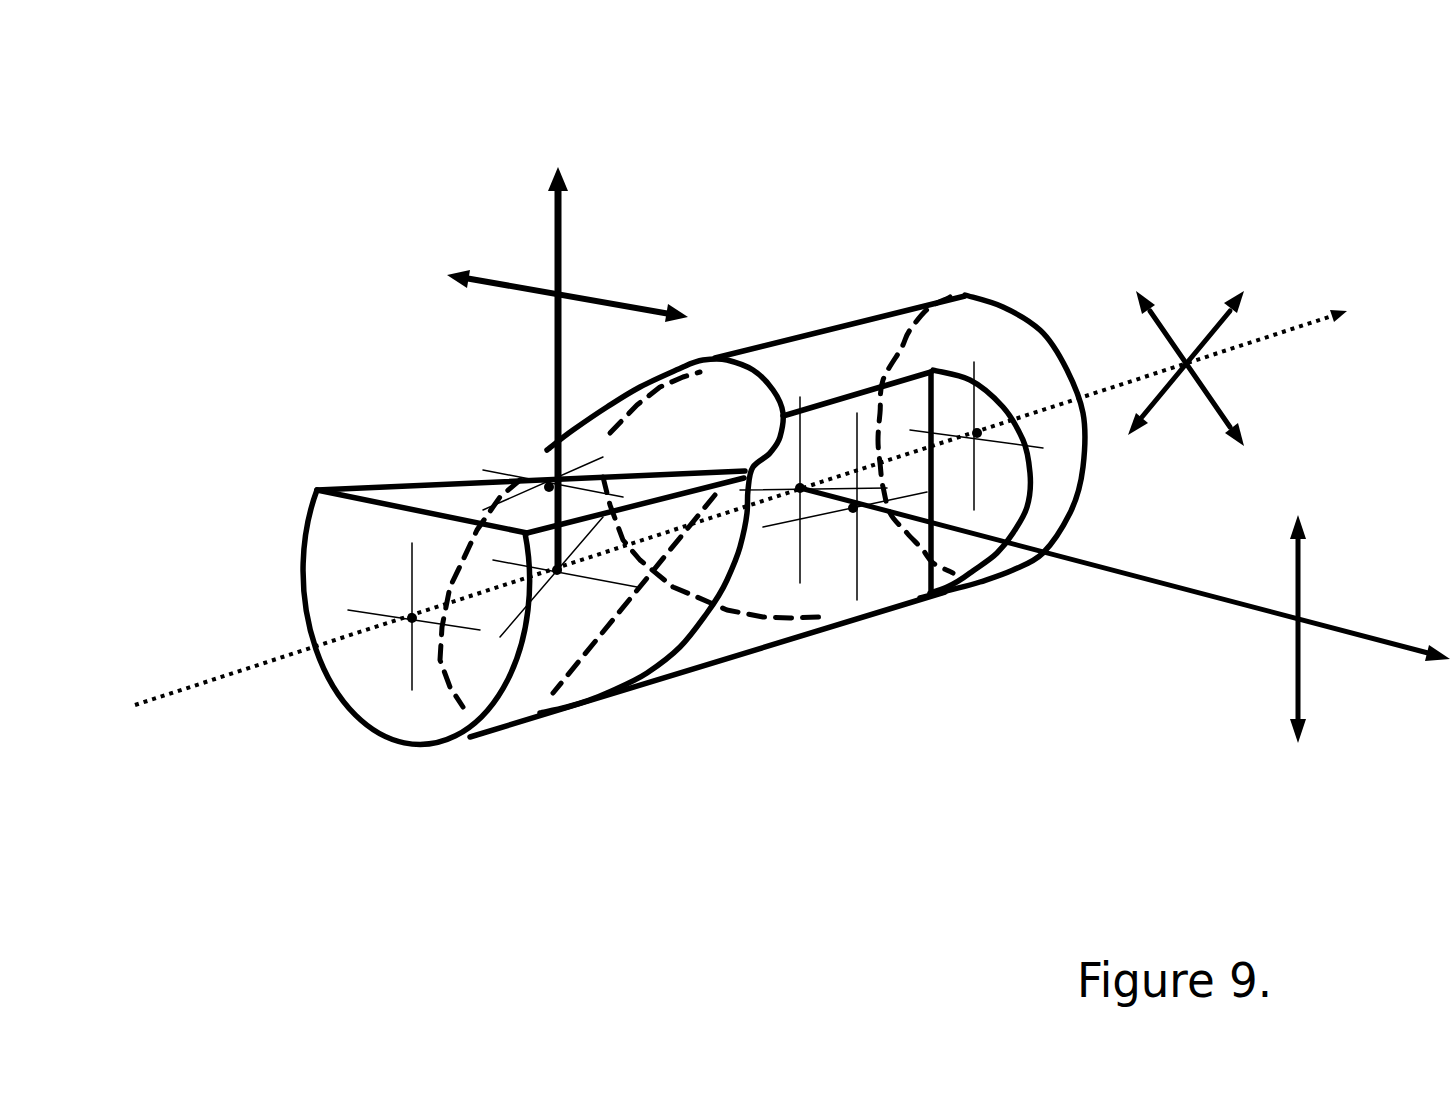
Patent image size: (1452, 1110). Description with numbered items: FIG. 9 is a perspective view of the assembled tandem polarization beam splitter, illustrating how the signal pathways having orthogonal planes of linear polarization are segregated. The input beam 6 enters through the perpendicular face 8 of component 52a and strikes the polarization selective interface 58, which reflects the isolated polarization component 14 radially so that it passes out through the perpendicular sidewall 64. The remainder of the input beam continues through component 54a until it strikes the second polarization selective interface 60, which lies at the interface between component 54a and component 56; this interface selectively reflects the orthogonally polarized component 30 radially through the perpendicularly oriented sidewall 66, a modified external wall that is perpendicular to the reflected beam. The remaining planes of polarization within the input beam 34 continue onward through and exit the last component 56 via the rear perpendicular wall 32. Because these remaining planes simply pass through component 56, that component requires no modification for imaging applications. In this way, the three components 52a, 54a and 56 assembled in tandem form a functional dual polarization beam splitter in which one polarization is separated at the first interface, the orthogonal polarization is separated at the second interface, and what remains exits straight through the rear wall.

The input beam 6 is at (731, 507).
The perpendicular face 8 is at (412, 618).
The isolated polarization component 14 is at (567, 368).
The orthogonally polarized component 30 is at (1340, 629).
The rear perpendicular wall 32 is at (977, 433).
The remaining planes of polarization 34 is at (1217, 368).
The component 52a is at (383, 745).
The component 54a is at (748, 655).
The component 56 is at (897, 306).
The polarization selective interface 58 is at (557, 570).
The second polarization selective interface 60 is at (800, 488).
The perpendicular sidewall 64 is at (549, 487).
The perpendicularly oriented sidewall 66 is at (853, 508).